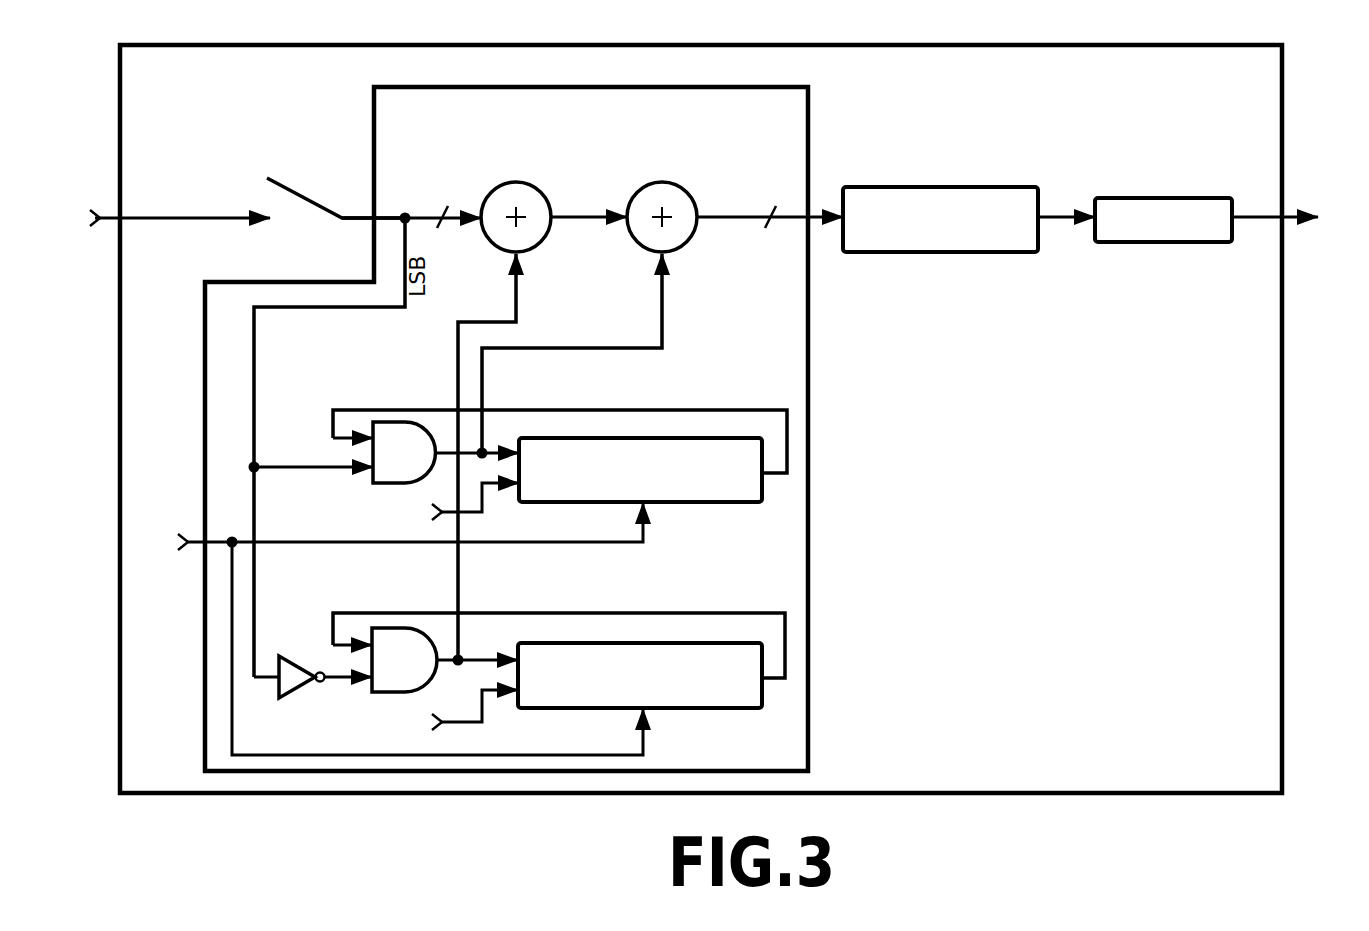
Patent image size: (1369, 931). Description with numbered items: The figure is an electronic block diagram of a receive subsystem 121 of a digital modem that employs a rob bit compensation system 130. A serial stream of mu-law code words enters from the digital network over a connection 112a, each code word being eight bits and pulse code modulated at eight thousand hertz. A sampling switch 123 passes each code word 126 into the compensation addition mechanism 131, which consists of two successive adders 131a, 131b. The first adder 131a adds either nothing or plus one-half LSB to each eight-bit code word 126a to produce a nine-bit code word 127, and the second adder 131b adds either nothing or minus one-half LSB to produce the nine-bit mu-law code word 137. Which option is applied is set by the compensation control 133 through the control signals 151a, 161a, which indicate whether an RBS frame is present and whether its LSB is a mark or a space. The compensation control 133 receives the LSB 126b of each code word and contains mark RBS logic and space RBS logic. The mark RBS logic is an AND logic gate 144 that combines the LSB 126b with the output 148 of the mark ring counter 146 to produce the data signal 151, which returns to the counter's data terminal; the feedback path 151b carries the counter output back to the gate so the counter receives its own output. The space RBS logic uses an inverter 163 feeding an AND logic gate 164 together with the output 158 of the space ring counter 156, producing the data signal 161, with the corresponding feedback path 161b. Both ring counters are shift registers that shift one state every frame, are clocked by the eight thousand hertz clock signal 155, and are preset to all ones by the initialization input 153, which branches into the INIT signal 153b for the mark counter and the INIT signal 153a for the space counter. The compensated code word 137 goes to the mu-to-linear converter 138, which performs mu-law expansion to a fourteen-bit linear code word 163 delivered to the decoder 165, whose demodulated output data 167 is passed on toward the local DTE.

The receive subsystem 121 is at (1282, 795).
The rob bit compensation system 130 is at (808, 552).
The connection 112a is at (188, 215).
The sampling switch 123 is at (302, 200).
The code word 126 is at (357, 215).
The 8-bit mu-law code word 126a is at (430, 213).
The LSB 126b is at (252, 378).
The 9-bit code word 127 is at (580, 213).
The compensation addition mechanism 131 is at (679, 279).
The adder 131a is at (493, 252).
The adder 131b is at (643, 250).
The compensation control 133 is at (330, 352).
The 9-bit mu-law code word 137 is at (733, 222).
The mu-to-linear converter 138 is at (952, 252).
The AND logic gate 144 is at (390, 420).
The mark ring counter 146 is at (750, 503).
The output 148 is at (787, 445).
The data signal 151 is at (448, 440).
The control signal 151a is at (458, 347).
The mark ring counter feedback line 151b is at (492, 447).
The INIT signal line 153 is at (193, 538).
The initialization signal 153a is at (322, 754).
The initialization signal 153b is at (305, 538).
The clock signal 155 is at (482, 500).
The space ring counter 156 is at (750, 709).
The output 158 is at (785, 650).
The data signal 161 is at (445, 650).
The control signal 161a is at (487, 376).
The space ring counter feedback line 161b is at (495, 655).
The inverter 163 is at (1062, 222).
The AND logic gate 164 is at (385, 628).
The decoder 165 is at (1193, 242).
The data 167 is at (1255, 215).